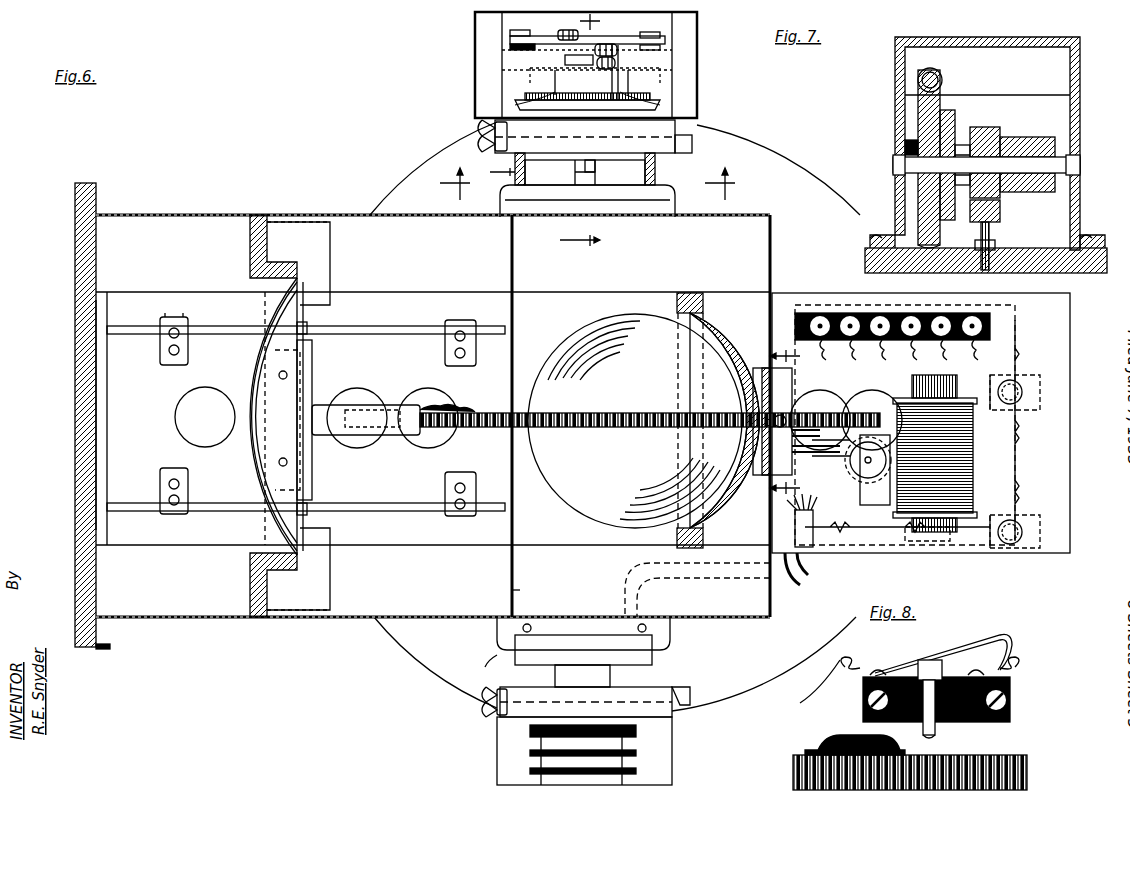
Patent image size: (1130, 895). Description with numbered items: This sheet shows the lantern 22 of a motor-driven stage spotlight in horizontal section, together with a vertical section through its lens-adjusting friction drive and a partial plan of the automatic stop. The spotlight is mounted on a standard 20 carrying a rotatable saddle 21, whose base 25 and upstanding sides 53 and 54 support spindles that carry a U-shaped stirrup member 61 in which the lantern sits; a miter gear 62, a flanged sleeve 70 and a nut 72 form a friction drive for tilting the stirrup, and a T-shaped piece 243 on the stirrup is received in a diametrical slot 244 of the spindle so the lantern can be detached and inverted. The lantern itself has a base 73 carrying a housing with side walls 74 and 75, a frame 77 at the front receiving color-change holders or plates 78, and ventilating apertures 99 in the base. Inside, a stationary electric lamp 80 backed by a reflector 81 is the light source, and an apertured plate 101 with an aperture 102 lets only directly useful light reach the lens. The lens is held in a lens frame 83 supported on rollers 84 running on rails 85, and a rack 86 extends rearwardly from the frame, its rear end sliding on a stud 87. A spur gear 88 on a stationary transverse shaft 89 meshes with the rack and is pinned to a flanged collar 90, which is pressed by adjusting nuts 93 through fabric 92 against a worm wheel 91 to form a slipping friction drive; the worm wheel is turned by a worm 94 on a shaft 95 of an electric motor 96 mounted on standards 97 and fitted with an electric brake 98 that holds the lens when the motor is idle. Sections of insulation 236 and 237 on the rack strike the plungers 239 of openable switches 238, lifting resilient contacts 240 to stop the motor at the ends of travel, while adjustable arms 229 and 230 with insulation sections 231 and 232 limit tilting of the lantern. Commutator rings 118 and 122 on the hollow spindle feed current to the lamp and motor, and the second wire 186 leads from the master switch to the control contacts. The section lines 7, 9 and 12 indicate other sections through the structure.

In FIG. 6, the section line 7 is at (794, 425).
In FIG. 6, the section line 9 is at (586, 135).
In FIG. 6, the section line / conduit 12 is at (590, 600).
In FIG. 6, the standard 20 is at (592, 188).
In FIG. 6, the saddle 21 is at (490, 656).
In FIG. 6, the lantern 22 is at (277, 212).
In FIG. 6, the base 25 is at (720, 683).
In FIG. 6, the upstanding side 53 is at (695, 703).
In FIG. 6, the upstanding side 54 is at (688, 143).
In FIG. 6, the U-shaped stirrup member 61 is at (660, 645).
In FIG. 6, the miter gear 62 is at (655, 106).
In FIG. 6, the flanged sleeve 70 is at (552, 92).
In FIG. 6, the nut 72 is at (600, 62).
In FIG. 6, the base 73 is at (433, 418).
In FIG. 7, the base 73 is at (1065, 270).
In FIG. 6, the side wall 74 is at (170, 619).
In FIG. 6, the side wall 75 is at (182, 215).
In FIG. 6, the frame 77 is at (100, 189).
In FIG. 6, the holders or plates 78 is at (82, 405).
In FIG. 6, the electric lamp 80 is at (610, 470).
In FIG. 6, the reflector 81 is at (262, 452).
In FIG. 6, the lens frame 83 is at (255, 598).
In FIG. 6, the rollers 84 is at (308, 330).
In FIG. 6, the rails 85 is at (404, 336).
In FIG. 6, the rack 86 is at (478, 414).
In FIG. 7, the rack 86 is at (1000, 211).
In FIG. 7, the stud 87 is at (992, 238).
In FIG. 7, the spur gear 88 is at (1002, 130).
In FIG. 7, the transverse shaft 89 is at (915, 164).
In FIG. 7, the flanged collar 90 is at (960, 142).
In FIG. 7, the worm wheel 91 is at (925, 111).
In FIG. 7, the fabric 92 is at (948, 120).
In FIG. 7, the adjusting nuts 93 is at (1035, 140).
In FIG. 7, the worm 94 is at (935, 70).
In FIG. 6, the shaft 95 is at (838, 468).
In FIG. 6, the electric motor 96 is at (948, 478).
In FIG. 6, the standards 97 is at (992, 520).
In FIG. 6, the electric brake 98 is at (872, 485).
In FIG. 6, the apertures 99 is at (190, 440).
In FIG. 6, the apertured plate 101 is at (512, 592).
In FIG. 6, the aperture 102 is at (514, 345).
In FIG. 6, the commutator ring 118 is at (552, 760).
In FIG. 6, the commutator ring 122 is at (552, 733).
In FIG. 8, the second wire 186 is at (1020, 765).
In FIG. 6, the rotatably adjustable arm 229 is at (520, 40).
In FIG. 6, the rotatably adjustable arm 230 is at (635, 38).
In FIG. 6, the section of insulation 231 is at (510, 48).
In FIG. 6, the section of insulation 232 is at (660, 50).
In FIG. 6, the section of insulation 236 is at (445, 410).
In FIG. 8, the section of insulation 236 is at (842, 733).
In FIG. 6, the section of insulation 237 is at (812, 418).
In FIG. 8, the openable switch 238 is at (1020, 655).
In FIG. 8, the plunger 239 is at (940, 735).
In FIG. 8, the resilient contacts 240 is at (1012, 640).
In FIG. 6, the T-shaped piece 243 is at (612, 170).
In FIG. 6, the diametrical slot 244 is at (602, 182).